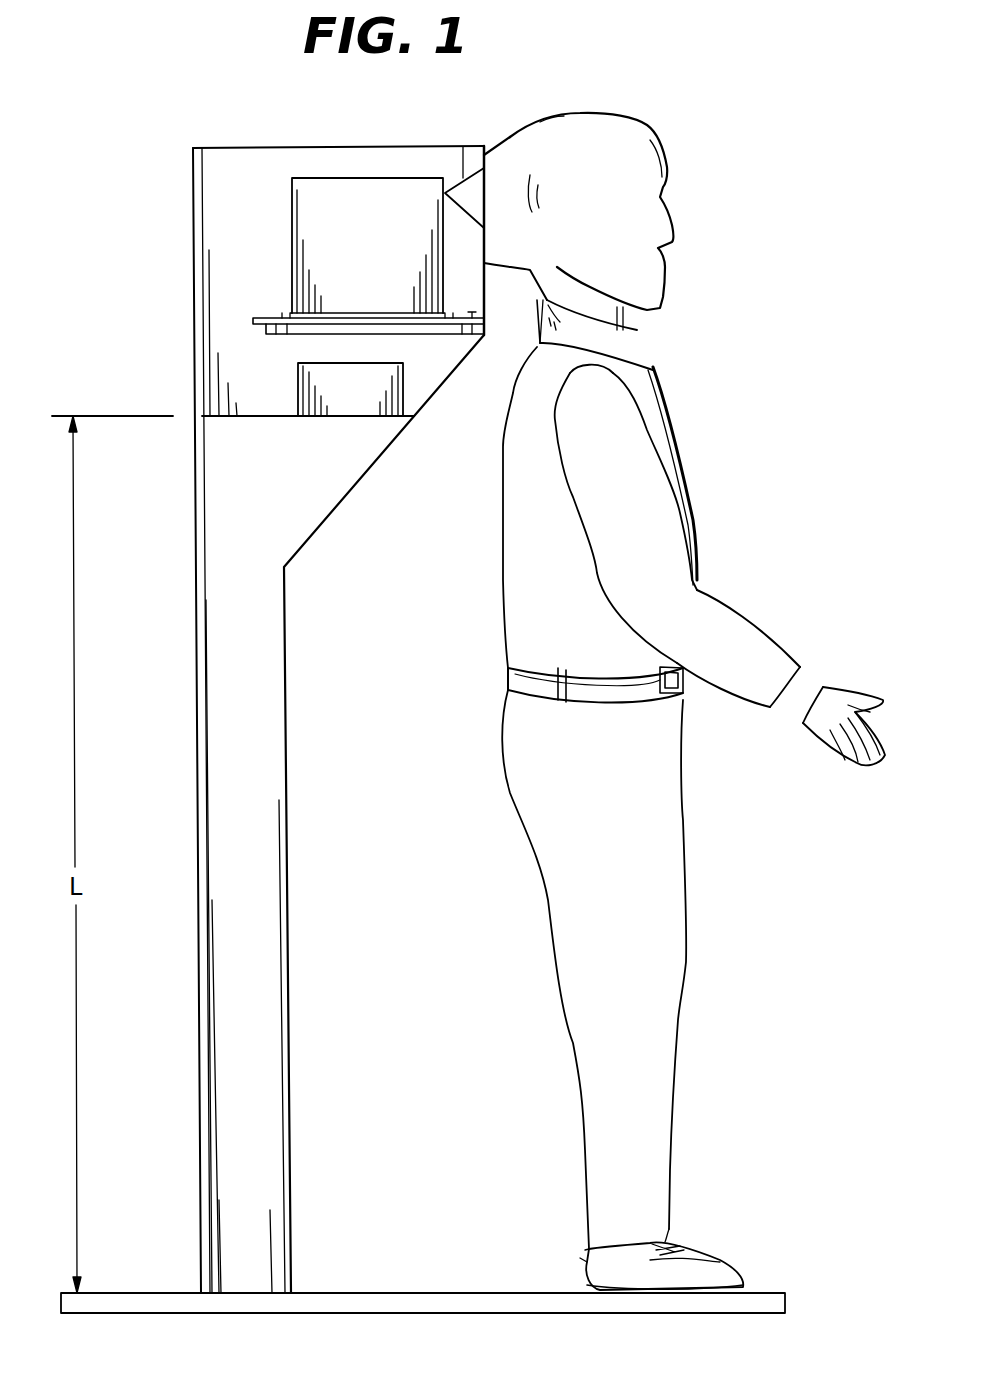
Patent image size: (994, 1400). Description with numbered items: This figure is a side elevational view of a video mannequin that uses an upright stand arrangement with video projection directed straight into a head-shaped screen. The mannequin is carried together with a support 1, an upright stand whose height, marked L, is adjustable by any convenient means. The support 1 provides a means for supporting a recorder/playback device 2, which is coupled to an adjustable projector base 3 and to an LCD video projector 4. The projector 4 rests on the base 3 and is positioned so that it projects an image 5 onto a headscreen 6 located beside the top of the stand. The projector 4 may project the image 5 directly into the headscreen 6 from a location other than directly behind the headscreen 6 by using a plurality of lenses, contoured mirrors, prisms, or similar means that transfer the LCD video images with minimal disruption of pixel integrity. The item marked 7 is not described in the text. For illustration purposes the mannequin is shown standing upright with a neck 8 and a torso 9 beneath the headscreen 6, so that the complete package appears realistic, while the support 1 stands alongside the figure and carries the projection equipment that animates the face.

The support 1 is at (195, 388).
The recorder/playback device 2 is at (298, 378).
The adjustable projector base 3 is at (253, 320).
The LCD video projector 4 is at (292, 213).
The image 5 is at (463, 147).
The headscreen 6 is at (665, 145).
The helmet strap 7 is at (505, 137).
The neck 8 is at (633, 322).
The torso 9 is at (693, 530).